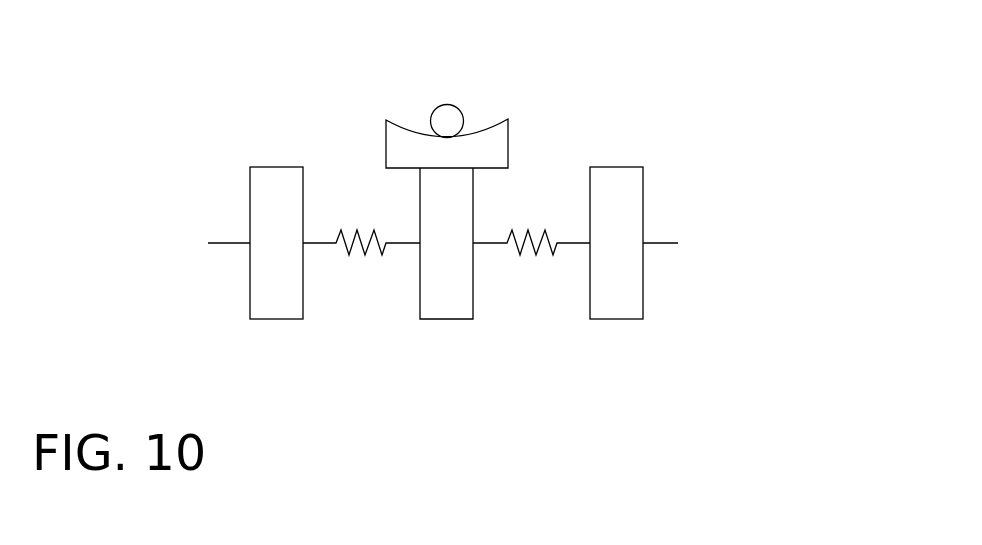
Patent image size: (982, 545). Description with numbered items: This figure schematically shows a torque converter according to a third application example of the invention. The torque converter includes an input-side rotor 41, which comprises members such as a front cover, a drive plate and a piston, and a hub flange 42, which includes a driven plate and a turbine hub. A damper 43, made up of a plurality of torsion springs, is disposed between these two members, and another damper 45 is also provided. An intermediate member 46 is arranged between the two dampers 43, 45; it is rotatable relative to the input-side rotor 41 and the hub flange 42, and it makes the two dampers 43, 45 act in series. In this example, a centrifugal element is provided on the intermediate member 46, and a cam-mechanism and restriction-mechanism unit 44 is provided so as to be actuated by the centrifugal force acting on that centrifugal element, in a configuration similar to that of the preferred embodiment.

The input-side rotor 41 is at (255, 193).
The hub flange 42 is at (630, 297).
The damper 43 is at (363, 259).
The cam-mechanism and restriction-mechanism unit 44 is at (422, 114).
The damper 45 is at (532, 259).
The intermediate member 46 is at (439, 313).